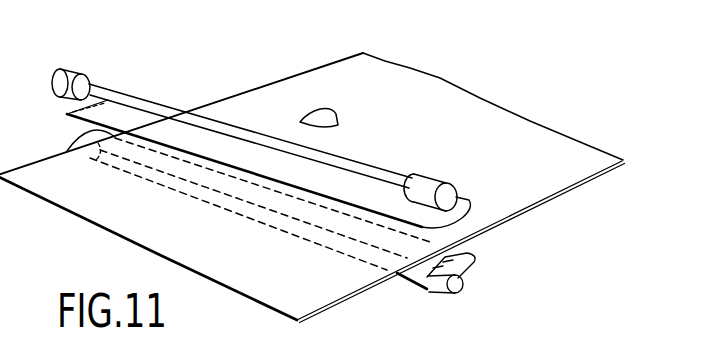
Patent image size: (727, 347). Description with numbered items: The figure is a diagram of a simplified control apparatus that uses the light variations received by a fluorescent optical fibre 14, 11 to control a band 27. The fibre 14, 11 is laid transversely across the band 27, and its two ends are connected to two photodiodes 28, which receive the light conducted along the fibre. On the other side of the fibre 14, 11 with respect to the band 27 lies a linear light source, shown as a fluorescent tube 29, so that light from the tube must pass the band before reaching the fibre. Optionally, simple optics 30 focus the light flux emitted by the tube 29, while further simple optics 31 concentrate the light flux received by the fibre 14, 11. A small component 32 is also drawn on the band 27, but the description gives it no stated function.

The fluorescent optical fibre 11 is at (248, 133).
The fluorescent optical fibre 14 is at (250, 122).
The band 27 is at (325, 80).
The photodiodes 28 is at (76, 73).
The fluorescent tube 29 is at (463, 286).
The optics 30 is at (458, 257).
The optics 31 is at (467, 203).
The hook tab 32 is at (328, 110).